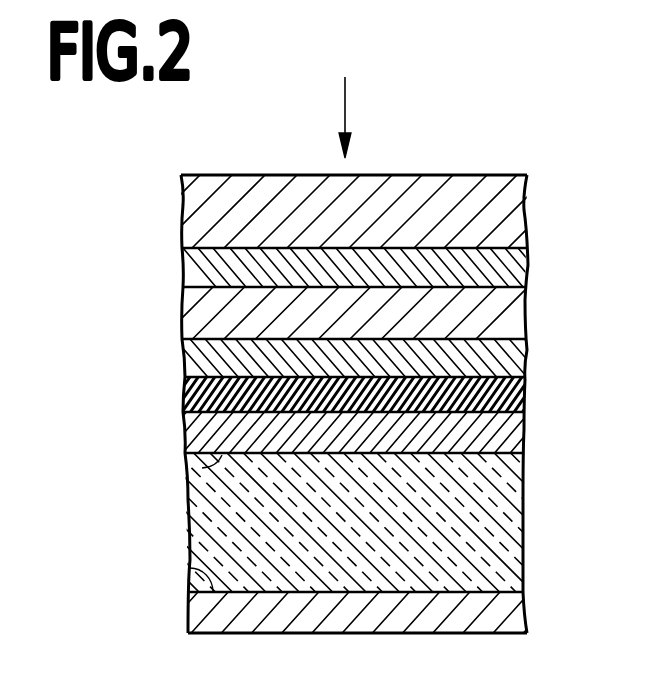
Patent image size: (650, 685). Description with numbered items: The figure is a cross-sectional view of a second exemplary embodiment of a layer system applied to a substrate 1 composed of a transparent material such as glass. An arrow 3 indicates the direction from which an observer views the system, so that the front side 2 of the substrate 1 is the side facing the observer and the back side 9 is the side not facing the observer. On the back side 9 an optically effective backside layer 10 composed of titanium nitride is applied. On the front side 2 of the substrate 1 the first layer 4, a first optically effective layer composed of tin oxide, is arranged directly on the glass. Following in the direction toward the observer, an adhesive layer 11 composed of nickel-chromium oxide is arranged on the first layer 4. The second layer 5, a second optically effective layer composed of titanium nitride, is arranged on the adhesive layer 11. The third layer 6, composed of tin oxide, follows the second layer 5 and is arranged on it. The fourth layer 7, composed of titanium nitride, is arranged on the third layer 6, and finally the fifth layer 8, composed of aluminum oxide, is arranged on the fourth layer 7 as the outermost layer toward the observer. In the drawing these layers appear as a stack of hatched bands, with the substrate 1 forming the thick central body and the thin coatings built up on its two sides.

The substrate 1 is at (510, 500).
The front side 2 is at (202, 468).
The arrow 3 is at (347, 122).
The first layer 4 is at (517, 431).
The second layer 5 is at (514, 356).
The third layer 6 is at (520, 312).
The fourth layer 7 is at (527, 261).
The fifth layer 8 is at (483, 190).
The back side 9 is at (190, 571).
The backside layer 10 is at (522, 606).
The adhesive layer 11 is at (523, 391).